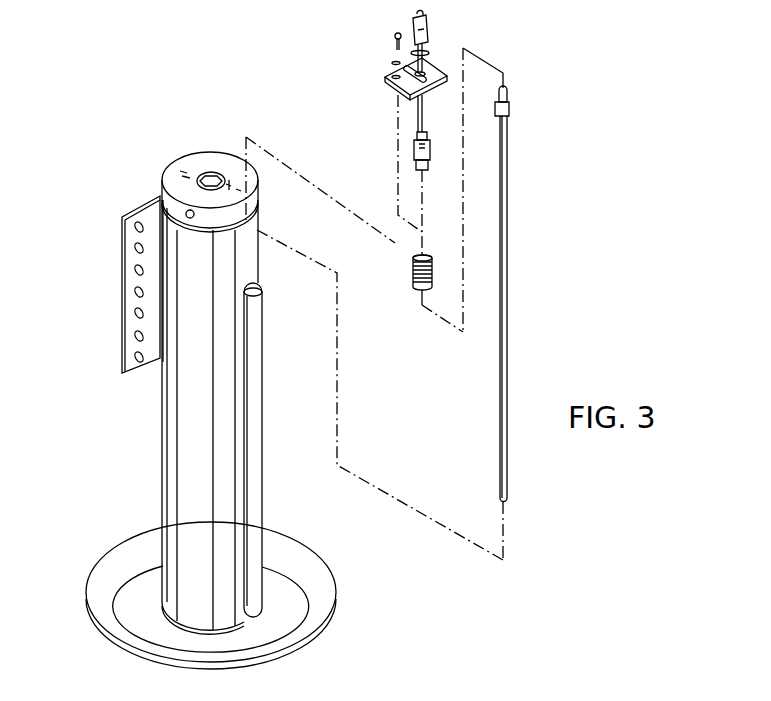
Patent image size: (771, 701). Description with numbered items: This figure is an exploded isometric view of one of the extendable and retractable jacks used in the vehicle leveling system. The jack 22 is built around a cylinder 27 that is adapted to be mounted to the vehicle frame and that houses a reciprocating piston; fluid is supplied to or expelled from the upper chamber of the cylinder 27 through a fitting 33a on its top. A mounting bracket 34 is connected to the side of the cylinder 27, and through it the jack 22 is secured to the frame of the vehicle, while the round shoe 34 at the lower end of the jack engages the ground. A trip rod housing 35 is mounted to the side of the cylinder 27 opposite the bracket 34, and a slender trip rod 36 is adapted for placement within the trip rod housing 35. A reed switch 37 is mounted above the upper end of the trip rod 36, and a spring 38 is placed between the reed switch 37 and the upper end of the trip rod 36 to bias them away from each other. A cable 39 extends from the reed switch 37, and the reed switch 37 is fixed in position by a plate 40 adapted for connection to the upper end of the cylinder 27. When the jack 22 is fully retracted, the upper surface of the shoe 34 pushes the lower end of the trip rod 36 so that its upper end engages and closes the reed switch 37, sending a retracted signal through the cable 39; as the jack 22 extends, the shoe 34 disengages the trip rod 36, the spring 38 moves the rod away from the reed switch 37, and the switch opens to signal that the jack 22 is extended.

The jack 22 is at (116, 424).
The cylinder 27 is at (163, 486).
The fitting 33a is at (189, 209).
The mounting bracket / shoe 34 is at (122, 310).
The trip rod housing 35 is at (262, 472).
The trip rod 36 is at (508, 278).
The reed switch 37 is at (430, 147).
The spring 38 is at (415, 284).
The cable 39 is at (428, 52).
The plate 40 is at (395, 82).